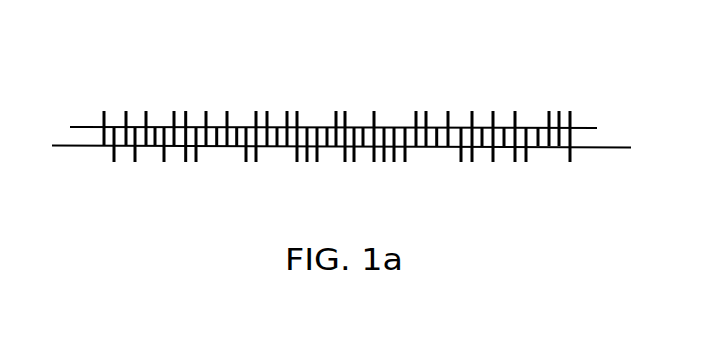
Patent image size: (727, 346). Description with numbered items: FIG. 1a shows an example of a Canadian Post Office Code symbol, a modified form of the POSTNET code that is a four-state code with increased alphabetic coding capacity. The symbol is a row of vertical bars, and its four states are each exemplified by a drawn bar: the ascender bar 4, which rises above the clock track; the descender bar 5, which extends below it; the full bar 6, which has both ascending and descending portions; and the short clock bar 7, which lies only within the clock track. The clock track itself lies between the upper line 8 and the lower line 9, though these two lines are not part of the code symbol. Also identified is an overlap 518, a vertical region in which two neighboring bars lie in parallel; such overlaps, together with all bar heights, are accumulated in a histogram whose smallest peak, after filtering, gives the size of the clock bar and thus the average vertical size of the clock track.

The ascender bar 4 is at (104, 111).
The descender bar 5 is at (114, 160).
The full bar 6 is at (206, 111).
The clock bar 7 is at (276, 127).
The line 8 is at (589, 128).
The line 9 is at (612, 148).
The overlap 518 is at (532, 145).